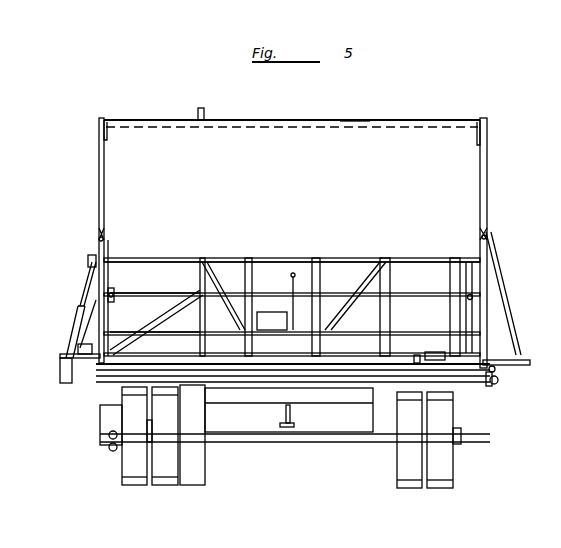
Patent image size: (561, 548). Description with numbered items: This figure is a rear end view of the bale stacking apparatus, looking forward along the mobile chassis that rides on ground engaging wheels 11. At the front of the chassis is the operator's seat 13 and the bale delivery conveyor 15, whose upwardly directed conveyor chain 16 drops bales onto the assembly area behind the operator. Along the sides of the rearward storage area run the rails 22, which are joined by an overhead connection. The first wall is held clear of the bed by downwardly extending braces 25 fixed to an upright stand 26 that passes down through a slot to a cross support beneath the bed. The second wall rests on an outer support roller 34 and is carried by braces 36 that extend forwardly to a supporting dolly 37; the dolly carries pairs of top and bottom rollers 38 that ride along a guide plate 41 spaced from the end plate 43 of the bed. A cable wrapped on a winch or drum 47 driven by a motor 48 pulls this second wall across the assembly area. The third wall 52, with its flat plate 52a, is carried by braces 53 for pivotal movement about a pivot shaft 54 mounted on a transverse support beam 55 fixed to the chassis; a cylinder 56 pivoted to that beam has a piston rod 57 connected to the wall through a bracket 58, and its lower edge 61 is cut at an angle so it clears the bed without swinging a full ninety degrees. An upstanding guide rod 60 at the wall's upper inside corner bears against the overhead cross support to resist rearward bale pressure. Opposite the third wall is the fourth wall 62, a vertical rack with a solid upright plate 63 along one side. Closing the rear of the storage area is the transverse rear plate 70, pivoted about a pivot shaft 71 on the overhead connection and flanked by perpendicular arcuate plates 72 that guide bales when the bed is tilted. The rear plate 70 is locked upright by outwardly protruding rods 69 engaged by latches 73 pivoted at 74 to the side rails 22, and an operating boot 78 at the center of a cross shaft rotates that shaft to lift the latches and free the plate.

The ground engaging wheels 11 is at (128, 478).
The seat 13 is at (278, 286).
The bale delivery conveyor 15 is at (214, 460).
The conveyor chain 16 is at (158, 356).
The rails 22 is at (114, 300).
The braces 25 is at (88, 312).
The upright stand 26 is at (80, 350).
The outer support roller 34 is at (432, 354).
The braces 36 is at (510, 316).
The supporting dolly 37 is at (530, 363).
The top and bottom rollers 38 is at (416, 356).
The guide plate 41 is at (500, 378).
The end plate 43 is at (470, 386).
The winch or drum 47 is at (152, 446).
The motor 48 is at (108, 446).
The third wall 52 is at (232, 314).
The flat plate 52a is at (176, 294).
The braces 53 is at (124, 256).
The pivot shaft 54 is at (62, 356).
The transverse support beam 55 is at (70, 384).
The cylinder 56 is at (74, 326).
The piston rod 57 is at (86, 282).
The bracket 58 is at (90, 256).
The guide rod 60 is at (205, 113).
The lower edge 61 is at (130, 330).
The fourth wall 62 is at (392, 270).
The upright plate 63 is at (200, 339).
The rods 69 is at (98, 240).
The rear plate 70 is at (282, 195).
The pivot shaft 71 is at (350, 122).
The arcuate plates 72 is at (488, 166).
The latches 73 is at (98, 232).
The pivot 74 is at (106, 240).
The operating boot 78 is at (294, 424).